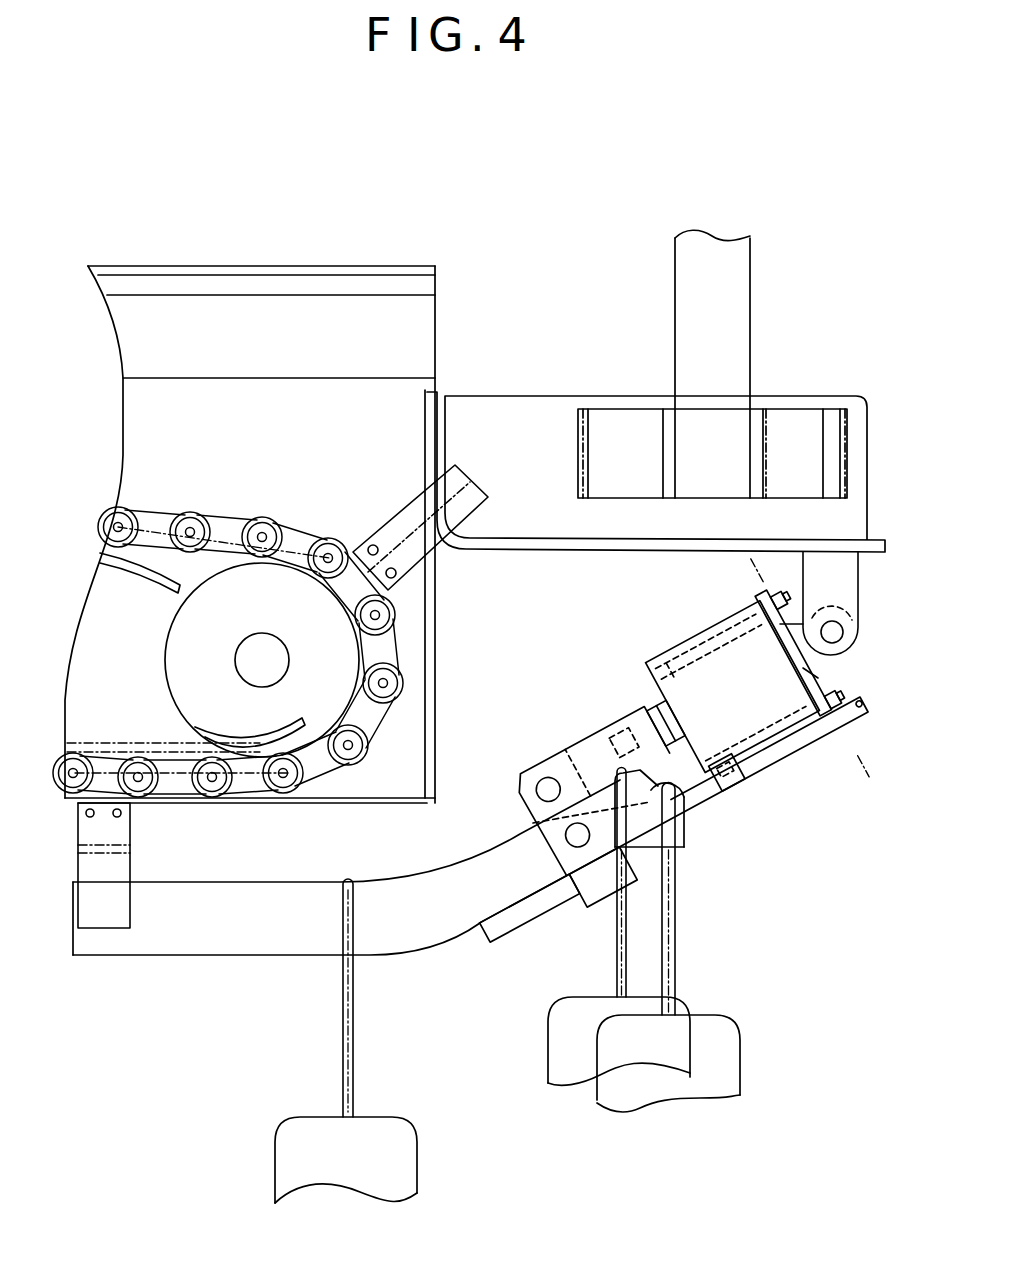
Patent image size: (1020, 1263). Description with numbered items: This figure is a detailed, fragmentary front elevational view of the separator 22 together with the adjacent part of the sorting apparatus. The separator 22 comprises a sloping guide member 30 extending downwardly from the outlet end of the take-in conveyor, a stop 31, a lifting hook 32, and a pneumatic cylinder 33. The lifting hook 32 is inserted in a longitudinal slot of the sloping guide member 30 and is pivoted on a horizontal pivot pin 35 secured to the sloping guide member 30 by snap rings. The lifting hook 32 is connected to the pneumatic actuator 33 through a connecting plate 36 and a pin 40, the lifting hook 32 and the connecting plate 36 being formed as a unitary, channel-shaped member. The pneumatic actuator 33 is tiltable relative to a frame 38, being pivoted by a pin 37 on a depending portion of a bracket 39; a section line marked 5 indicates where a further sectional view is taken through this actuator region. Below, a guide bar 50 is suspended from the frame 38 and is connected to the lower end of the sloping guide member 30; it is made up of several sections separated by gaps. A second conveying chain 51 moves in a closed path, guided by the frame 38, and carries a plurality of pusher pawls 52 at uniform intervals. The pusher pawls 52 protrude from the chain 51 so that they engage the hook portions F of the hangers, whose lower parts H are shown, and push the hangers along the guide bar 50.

The separator 22 is at (698, 835).
The sloping guide member 30 is at (745, 788).
The stop 31 is at (701, 803).
The lifting hook 32 is at (689, 850).
The pneumatic cylinder 33 is at (703, 632).
The horizontal pivot pin 35 is at (565, 838).
The connecting plate 36 is at (515, 803).
The pin 37 is at (833, 643).
The frame 38 is at (442, 634).
The bracket 39 is at (556, 553).
The pin 40 is at (546, 783).
The guide bar 50 is at (196, 952).
The second conveying chain 51 is at (233, 508).
The pusher pawls 52 is at (412, 503).
The section line 5- 5 is at (748, 561).
The hook portions F is at (354, 1050).
The weights H is at (417, 1165).